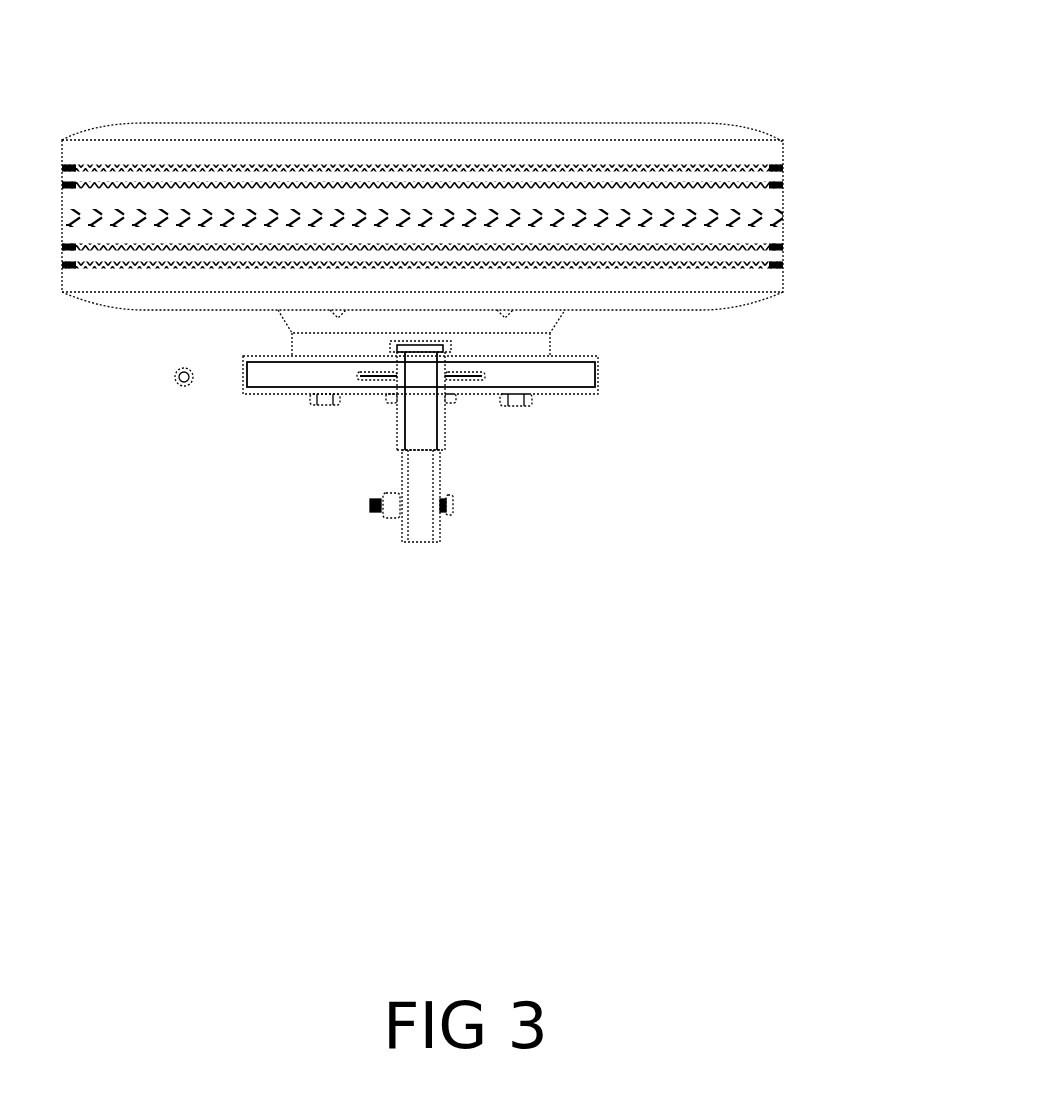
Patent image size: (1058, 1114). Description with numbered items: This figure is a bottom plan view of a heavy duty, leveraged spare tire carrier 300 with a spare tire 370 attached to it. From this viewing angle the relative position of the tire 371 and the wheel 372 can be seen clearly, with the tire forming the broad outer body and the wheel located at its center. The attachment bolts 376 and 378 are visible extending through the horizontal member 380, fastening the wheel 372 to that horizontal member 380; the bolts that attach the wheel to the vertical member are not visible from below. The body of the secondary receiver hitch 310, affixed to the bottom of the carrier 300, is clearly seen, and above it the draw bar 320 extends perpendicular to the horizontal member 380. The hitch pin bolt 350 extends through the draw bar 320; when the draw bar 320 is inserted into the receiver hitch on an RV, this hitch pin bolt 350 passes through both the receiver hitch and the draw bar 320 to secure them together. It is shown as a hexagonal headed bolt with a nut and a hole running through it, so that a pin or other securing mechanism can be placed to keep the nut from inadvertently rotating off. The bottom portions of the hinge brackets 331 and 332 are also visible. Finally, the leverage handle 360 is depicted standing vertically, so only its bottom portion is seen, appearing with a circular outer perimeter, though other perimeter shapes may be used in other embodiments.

The spare tire carrier 300 is at (220, 887).
The secondary receiver hitch 310 is at (430, 446).
The draw bar 320 is at (413, 480).
The hinge bracket 331 is at (452, 352).
The hinge bracket 332 is at (447, 402).
The hitch pin bolt 350 is at (370, 505).
The leverage handle 360 is at (177, 378).
The spare tire 370 is at (360, 80).
The tire 371 is at (548, 125).
The wheel 372 is at (550, 343).
The attachment bolt 376 is at (530, 407).
The attachment bolt 378 is at (312, 403).
The horizontal member 380 is at (243, 372).